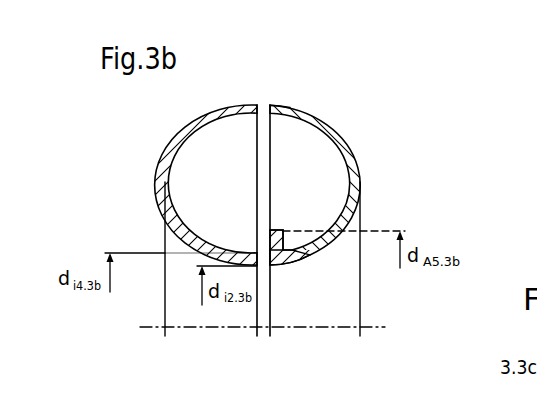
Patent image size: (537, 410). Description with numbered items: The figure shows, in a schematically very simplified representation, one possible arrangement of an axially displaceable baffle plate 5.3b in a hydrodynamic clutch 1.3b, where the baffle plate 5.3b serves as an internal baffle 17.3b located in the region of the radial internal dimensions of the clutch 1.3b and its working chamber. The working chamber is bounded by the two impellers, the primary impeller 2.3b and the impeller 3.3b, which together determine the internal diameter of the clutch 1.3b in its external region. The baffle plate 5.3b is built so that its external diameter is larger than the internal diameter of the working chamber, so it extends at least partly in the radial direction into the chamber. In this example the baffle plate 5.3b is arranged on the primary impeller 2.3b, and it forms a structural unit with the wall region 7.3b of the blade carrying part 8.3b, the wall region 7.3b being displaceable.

The hydrodynamic clutch 1.3b is at (283, 86).
The primary impeller 2.3b is at (331, 131).
The impeller 3.3b is at (175, 163).
The baffle plate 5.3b is at (384, 188).
The wall region 7.3b is at (322, 246).
The blade carrying part 8.3b is at (303, 115).
The internal baffle 17.3b is at (285, 223).